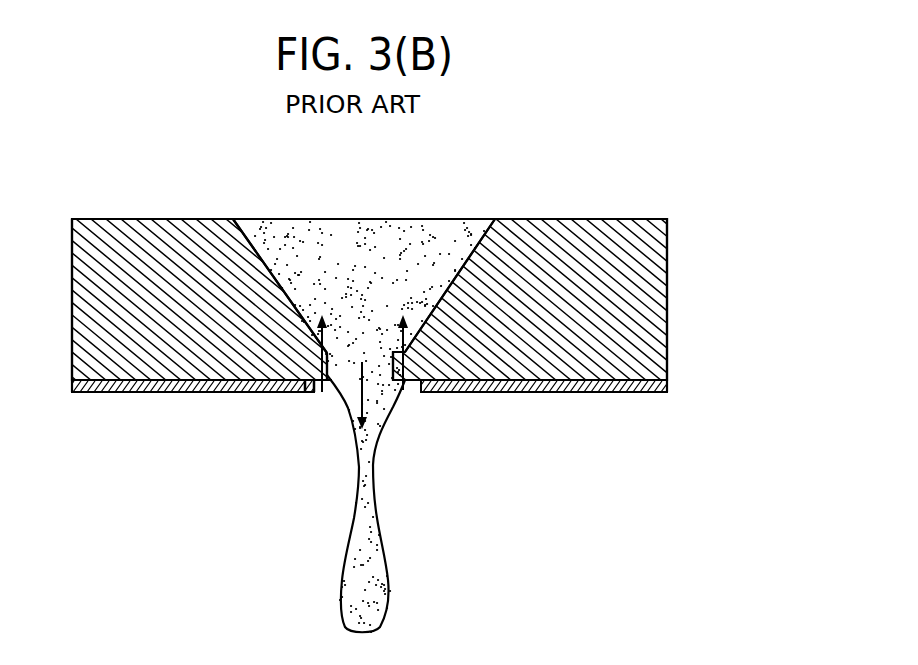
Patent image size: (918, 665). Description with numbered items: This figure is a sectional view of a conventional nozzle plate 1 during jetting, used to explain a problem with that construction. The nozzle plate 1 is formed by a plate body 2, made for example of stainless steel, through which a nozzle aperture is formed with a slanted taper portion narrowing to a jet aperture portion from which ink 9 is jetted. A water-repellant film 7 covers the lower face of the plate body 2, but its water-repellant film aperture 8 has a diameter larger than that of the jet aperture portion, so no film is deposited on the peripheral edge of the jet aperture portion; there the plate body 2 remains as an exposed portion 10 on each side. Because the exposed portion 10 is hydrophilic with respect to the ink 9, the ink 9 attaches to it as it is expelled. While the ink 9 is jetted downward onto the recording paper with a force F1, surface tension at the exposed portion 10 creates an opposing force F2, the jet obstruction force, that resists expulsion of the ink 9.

The nozzle plate 1 is at (446, 155).
The plate body 2 is at (628, 283).
The water-repellant film 7 is at (150, 393).
The water-repellant film aperture 8 is at (315, 388).
The ink 9 is at (350, 247).
The exposed portion 10 is at (327, 391).
The jetting force F1 is at (363, 399).
The jet obstruction force F2 is at (366, 339).